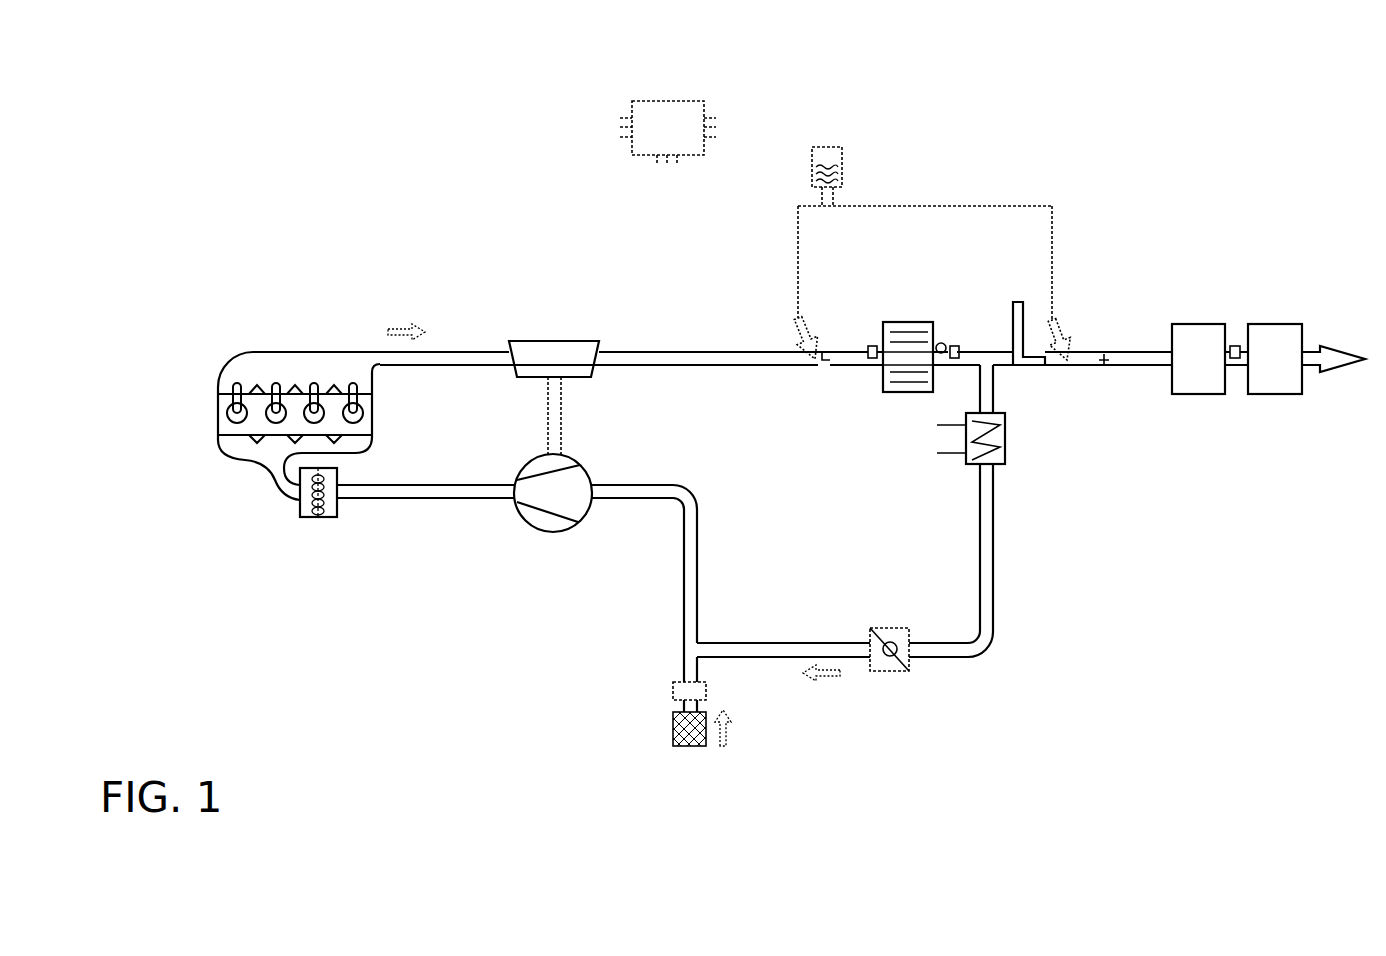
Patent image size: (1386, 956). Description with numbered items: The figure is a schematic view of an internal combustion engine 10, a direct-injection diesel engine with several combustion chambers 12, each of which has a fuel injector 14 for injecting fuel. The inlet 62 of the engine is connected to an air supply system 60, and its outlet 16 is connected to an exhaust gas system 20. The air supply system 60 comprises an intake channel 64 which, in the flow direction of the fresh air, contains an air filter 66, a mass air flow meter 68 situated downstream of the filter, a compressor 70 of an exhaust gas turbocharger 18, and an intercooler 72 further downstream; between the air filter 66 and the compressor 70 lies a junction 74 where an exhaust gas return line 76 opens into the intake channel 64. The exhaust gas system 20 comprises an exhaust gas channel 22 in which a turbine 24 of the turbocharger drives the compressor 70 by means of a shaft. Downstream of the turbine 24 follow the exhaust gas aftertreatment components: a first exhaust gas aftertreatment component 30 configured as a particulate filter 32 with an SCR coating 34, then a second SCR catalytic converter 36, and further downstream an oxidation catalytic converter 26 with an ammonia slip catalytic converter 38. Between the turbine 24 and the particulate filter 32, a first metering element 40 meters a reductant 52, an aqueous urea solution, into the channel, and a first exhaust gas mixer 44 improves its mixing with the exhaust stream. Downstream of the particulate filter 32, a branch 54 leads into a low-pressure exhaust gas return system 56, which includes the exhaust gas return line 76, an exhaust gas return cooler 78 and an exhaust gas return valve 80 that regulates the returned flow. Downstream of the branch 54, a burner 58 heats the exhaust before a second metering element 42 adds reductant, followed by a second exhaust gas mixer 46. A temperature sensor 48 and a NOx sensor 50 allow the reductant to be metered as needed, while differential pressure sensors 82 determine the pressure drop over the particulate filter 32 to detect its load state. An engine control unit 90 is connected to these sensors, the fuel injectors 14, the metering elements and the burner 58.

The internal combustion engine 10 is at (225, 428).
The combustion chamber 12 is at (227, 412).
The fuel injector 14 is at (273, 387).
The outlet 16 is at (323, 363).
The exhaust gas turbocharger 18 is at (590, 437).
The exhaust gas system 20 is at (1109, 160).
The exhaust gas channel 22 is at (440, 358).
The turbine 24 is at (553, 359).
The oxidation catalytic converter 26 is at (1278, 387).
The first exhaust gas aftertreatment component 30 is at (915, 323).
The particulate filter 32 is at (903, 342).
The SCR coating 34 is at (898, 382).
The second SCR catalytic converter 36 is at (1199, 342).
The ammonia slip catalytic converter 38 is at (1275, 342).
The first metering element 40 is at (804, 345).
The second metering element 42 is at (1063, 341).
The first exhaust gas mixer 44 is at (827, 367).
The second exhaust gas mixer 46 is at (1107, 353).
The temperature sensor 48 is at (955, 348).
The NOx sensor 50 is at (1238, 345).
The reductant 52 is at (836, 164).
The branch 54 is at (987, 363).
The low-pressure exhaust gas return system 56 is at (1022, 662).
The burner 58 is at (1018, 312).
The air supply system 60 is at (650, 535).
The inlet 62 is at (271, 465).
The intake channel 64 is at (441, 492).
The air filter 66 is at (683, 728).
The mass air flow meter 68 is at (683, 690).
The compressor 70 is at (542, 520).
The intercooler 72 is at (307, 512).
The junction 74 is at (697, 650).
The exhaust gas return line 76 is at (987, 514).
The exhaust gas return cooler 78 is at (998, 445).
The exhaust gas return valve 80 is at (885, 663).
The differential pressure sensor 82 is at (870, 348).
The engine control unit 90 is at (671, 117).